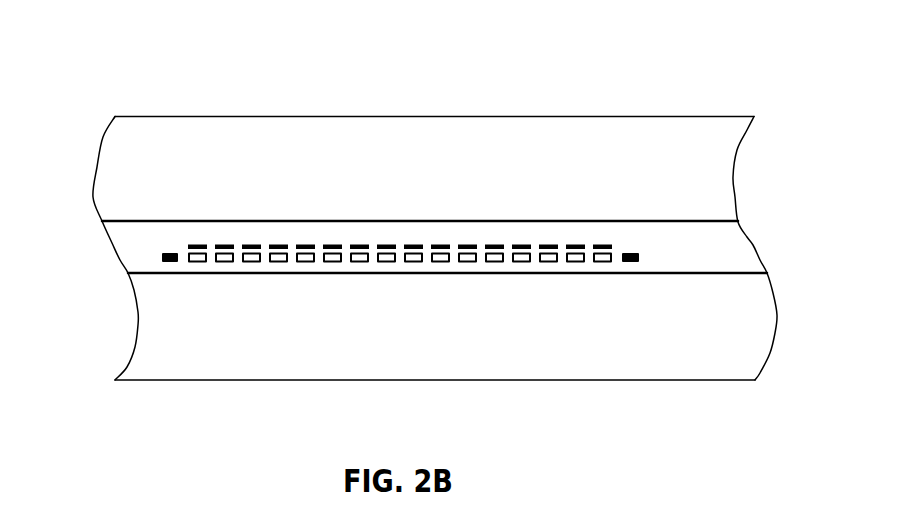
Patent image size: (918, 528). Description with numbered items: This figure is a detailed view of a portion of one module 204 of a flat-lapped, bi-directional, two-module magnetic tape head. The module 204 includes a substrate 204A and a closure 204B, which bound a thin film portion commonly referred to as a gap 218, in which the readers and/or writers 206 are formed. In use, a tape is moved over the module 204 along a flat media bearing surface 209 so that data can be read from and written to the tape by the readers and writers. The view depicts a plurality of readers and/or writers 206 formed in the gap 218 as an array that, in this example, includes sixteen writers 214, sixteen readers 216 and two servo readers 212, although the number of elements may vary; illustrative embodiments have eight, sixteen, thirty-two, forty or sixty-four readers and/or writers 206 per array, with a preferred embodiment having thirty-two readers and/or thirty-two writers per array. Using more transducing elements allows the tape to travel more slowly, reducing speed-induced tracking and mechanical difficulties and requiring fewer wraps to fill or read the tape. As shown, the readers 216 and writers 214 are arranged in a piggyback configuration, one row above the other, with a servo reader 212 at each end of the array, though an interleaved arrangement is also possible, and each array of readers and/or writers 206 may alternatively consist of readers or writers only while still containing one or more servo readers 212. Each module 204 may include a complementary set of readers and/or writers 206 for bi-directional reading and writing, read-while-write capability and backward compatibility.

The module 204 is at (124, 88).
The substrate 204A is at (223, 116).
The closure 204B is at (277, 380).
The media bearing surface 209 is at (358, 187).
The readers and/or writers 206 is at (675, 240).
The writers 214 is at (520, 244).
The readers 216 is at (523, 263).
The servo readers 212 is at (162, 257).
The gap 218 is at (753, 245).